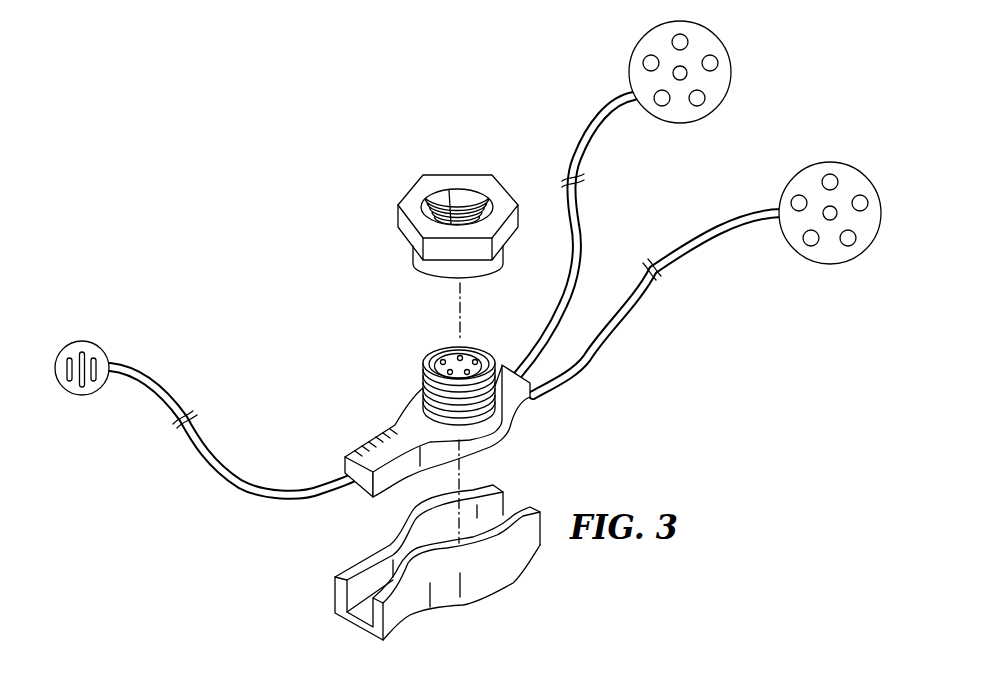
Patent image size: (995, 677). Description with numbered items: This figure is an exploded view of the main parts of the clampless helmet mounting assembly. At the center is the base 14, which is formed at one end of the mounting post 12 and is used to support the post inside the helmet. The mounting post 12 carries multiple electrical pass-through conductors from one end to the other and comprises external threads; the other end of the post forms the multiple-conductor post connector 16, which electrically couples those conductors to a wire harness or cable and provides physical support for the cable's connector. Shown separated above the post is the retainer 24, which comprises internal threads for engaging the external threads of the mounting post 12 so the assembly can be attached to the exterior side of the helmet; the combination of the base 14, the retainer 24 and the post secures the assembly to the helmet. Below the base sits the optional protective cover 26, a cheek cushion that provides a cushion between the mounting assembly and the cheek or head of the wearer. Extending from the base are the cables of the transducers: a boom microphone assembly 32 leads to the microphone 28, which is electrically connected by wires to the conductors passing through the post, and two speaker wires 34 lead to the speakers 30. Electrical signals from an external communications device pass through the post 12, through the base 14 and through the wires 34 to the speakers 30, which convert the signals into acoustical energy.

The mounting post 12 is at (483, 352).
The base 14 is at (355, 414).
The post connector 16 is at (444, 354).
The retainer 24 is at (410, 189).
The protective cover 26 is at (350, 567).
The microphone 28 is at (80, 342).
The speakers 30 is at (683, 123).
The boom microphone assembly 32 is at (150, 388).
The speaker wires 34 is at (590, 123).